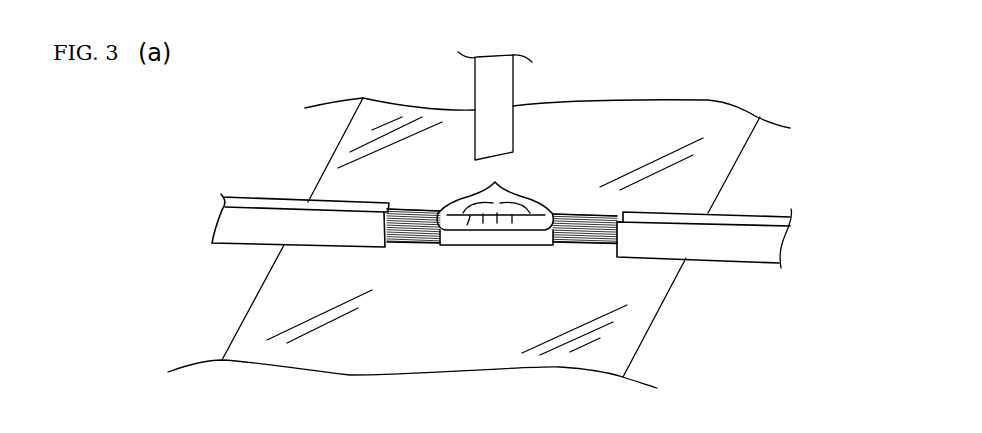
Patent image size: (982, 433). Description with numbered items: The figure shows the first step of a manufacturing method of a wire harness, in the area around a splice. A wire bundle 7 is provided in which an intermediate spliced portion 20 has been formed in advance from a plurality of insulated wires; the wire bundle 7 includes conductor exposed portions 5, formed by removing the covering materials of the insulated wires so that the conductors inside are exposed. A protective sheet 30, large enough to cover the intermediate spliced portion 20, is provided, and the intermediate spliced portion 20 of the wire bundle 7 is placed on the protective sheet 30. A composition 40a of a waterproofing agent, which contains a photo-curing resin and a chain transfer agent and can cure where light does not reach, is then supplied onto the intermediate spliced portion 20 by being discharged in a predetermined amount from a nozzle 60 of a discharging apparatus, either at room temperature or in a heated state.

The protective sheet 30 is at (708, 101).
The nozzle 60 is at (517, 88).
The intermediate spliced portion 20 is at (391, 276).
The wire bundle 7 is at (245, 252).
The conductor exposed portion 5 is at (409, 213).
The composition of waterproofing agent 40a is at (522, 196).